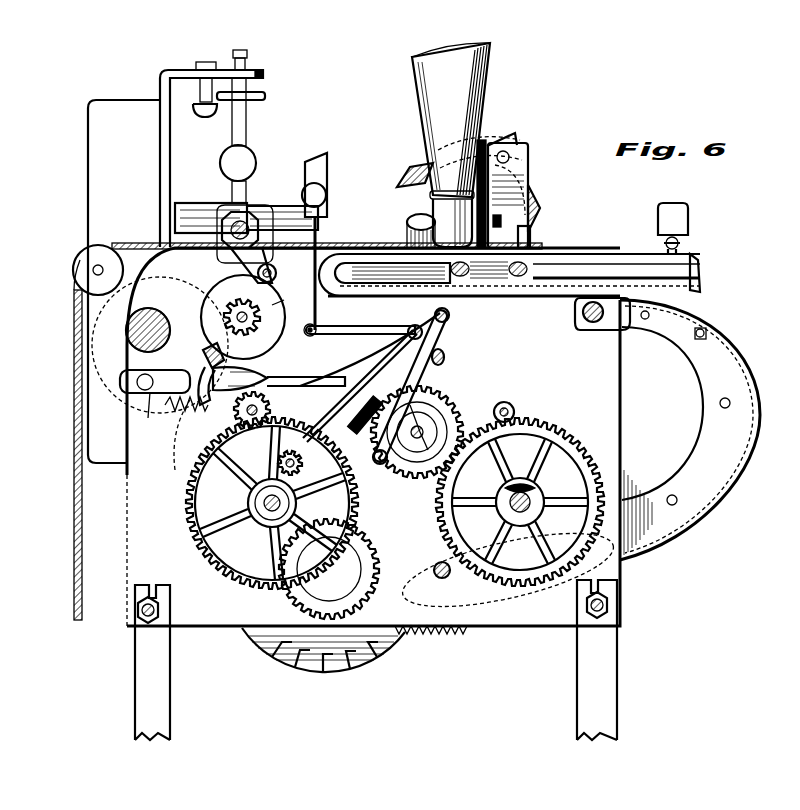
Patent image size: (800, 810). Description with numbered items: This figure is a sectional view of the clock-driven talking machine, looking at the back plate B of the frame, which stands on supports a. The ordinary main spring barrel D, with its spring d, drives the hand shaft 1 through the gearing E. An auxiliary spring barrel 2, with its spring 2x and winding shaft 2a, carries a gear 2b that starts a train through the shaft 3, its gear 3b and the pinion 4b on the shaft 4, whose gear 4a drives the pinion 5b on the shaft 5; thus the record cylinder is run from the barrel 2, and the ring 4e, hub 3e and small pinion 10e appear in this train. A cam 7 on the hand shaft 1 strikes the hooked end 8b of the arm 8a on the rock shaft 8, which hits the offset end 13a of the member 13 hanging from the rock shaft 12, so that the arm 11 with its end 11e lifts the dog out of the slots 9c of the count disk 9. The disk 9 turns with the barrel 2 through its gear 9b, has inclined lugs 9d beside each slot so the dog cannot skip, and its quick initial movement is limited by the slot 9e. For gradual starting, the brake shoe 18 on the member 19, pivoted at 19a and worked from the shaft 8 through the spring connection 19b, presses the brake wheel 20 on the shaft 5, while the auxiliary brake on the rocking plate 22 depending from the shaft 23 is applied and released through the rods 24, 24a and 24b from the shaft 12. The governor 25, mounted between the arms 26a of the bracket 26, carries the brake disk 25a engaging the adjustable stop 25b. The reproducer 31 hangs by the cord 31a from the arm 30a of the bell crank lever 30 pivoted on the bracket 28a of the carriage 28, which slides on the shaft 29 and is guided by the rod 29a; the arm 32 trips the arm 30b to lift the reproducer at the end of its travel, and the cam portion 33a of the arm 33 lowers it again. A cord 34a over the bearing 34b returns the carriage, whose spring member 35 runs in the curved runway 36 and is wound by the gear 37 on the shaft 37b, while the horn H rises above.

The hand shaft 1 is at (410, 456).
The auxiliary spring barrel 2 is at (260, 536).
The winding shaft 2a is at (247, 505).
The gear 2b is at (188, 519).
The spring 2x is at (304, 503).
The shaft 3 is at (268, 410).
The gear 3b is at (180, 463).
The pinion shaft 3e is at (240, 418).
The shaft 4 is at (140, 330).
The gear 4a is at (72, 330).
The pinion 4b is at (120, 376).
The cam ring 4e is at (208, 300).
The shaft 5 is at (242, 311).
The pinion 5b is at (289, 293).
The cam 7 is at (450, 401).
The rock shaft 8 is at (450, 315).
The arm 8a is at (444, 363).
The hooked end 8b is at (380, 466).
The count wheel or locking disk 9 is at (278, 657).
The gear 9b is at (372, 592).
The peripheral slots 9c is at (366, 660).
The inclined lugs 9d is at (333, 670).
The slot 9e is at (322, 572).
The small pinion 10e is at (290, 457).
The arm 11 is at (368, 366).
The pinion pin 11e is at (280, 461).
The rock shaft 12 is at (424, 333).
The downwardly extended member 13 is at (410, 380).
The offset end 13a is at (372, 427).
The brake shoe 18 is at (205, 352).
The elongated member 19 is at (262, 380).
The pivot 19a is at (144, 414).
The spring connection 19b is at (205, 412).
The brake wheel 20 is at (283, 318).
The rocking plate 22 is at (240, 262).
The shaft 23 is at (229, 229).
The rod 24 is at (277, 211).
The rod 24a is at (356, 243).
The rod 24b is at (354, 329).
The governor 25 is at (247, 140).
The brake disk 25a is at (262, 96).
The adjustable stop 25b is at (197, 115).
The bracket 26 is at (160, 165).
The arms 26a is at (185, 70).
The carriage 28 is at (533, 241).
The bracket 28a is at (530, 182).
The shaft 29 is at (700, 284).
The rod 29a is at (620, 246).
The bell crank lever 30 is at (502, 143).
The arm 30a is at (417, 171).
The arm 30b is at (543, 212).
The reproducer 31 is at (420, 227).
The cord 31a is at (397, 246).
The arm 32 is at (658, 221).
The arm 33 is at (210, 205).
The offset cam portion 33a is at (324, 158).
The cord 34a is at (74, 437).
The anti-friction bearing 34b is at (74, 266).
The elongated spring member 35 is at (760, 412).
The curved runway 36 is at (676, 413).
The gear 37 is at (462, 635).
The shaft 37b is at (442, 580).
The horn H is at (467, 145).
The back plate B is at (413, 437).
The main spring barrel D is at (542, 494).
The spring d is at (518, 480).
The gearing E is at (495, 412).
The supports a is at (168, 690).